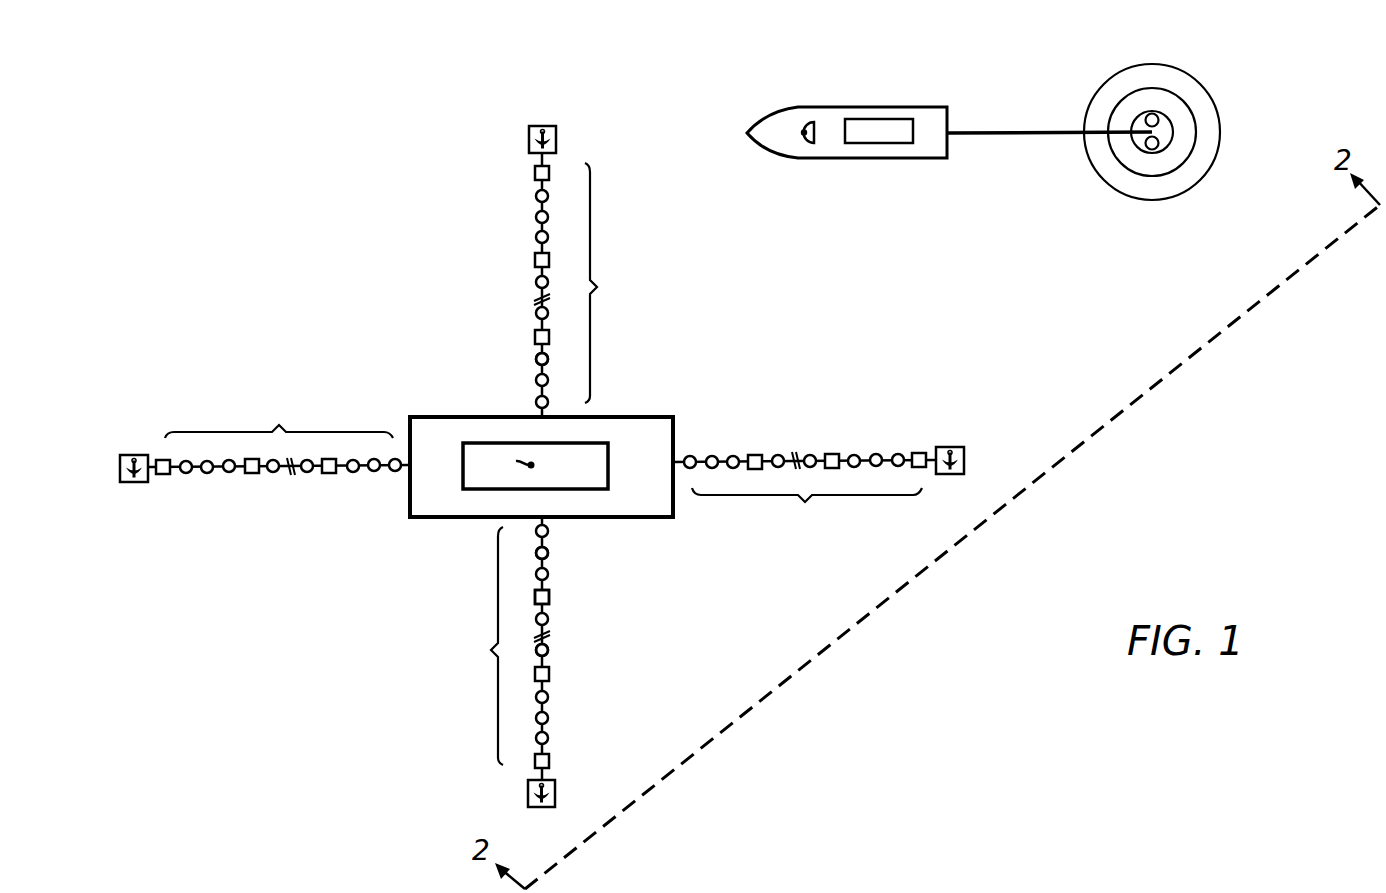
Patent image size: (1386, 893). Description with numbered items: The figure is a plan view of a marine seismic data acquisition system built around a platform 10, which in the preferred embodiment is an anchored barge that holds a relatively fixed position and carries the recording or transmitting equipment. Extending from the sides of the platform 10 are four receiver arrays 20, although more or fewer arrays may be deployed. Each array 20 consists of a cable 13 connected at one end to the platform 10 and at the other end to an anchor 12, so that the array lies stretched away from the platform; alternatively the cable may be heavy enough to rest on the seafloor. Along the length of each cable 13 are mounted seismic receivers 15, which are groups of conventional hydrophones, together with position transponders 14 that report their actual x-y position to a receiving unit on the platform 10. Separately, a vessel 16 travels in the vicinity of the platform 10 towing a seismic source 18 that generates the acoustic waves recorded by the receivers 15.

The platform 10 is at (676, 437).
The anchor 12 is at (557, 790).
The cable 13 is at (537, 365).
The position transponders 14 is at (550, 597).
The seismic receivers 15 is at (550, 650).
The vessel 16 is at (878, 107).
The seismic source 18 is at (1152, 113).
The receiver arrays 20 is at (541, 466).